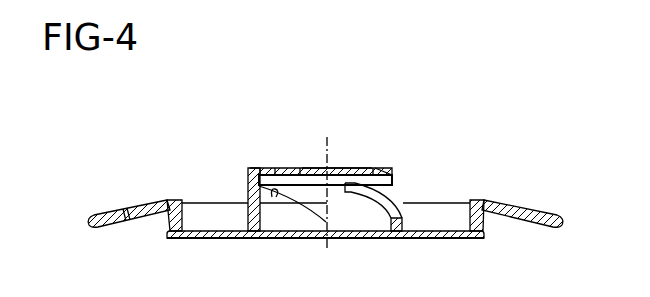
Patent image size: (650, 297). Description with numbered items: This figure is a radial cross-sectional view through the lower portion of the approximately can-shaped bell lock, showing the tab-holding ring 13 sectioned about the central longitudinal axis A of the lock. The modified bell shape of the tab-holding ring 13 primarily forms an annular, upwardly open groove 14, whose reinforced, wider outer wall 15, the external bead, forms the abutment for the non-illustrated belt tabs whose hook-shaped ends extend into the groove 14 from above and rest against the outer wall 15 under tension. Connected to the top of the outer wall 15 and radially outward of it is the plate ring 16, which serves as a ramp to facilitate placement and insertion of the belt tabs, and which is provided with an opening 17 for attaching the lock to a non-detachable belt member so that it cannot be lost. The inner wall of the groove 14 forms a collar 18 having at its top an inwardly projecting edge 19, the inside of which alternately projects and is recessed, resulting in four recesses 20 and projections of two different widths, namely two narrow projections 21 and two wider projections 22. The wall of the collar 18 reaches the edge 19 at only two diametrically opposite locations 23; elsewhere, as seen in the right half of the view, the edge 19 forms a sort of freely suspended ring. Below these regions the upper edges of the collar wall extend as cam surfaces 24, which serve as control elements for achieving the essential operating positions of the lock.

The tab-holding ring 13 is at (373, 239).
The groove 14 is at (197, 210).
The outer wall 15 is at (173, 203).
The plate ring 16 is at (109, 214).
The opening 17 is at (142, 208).
The collar 18 is at (353, 203).
The edge 19 is at (383, 168).
The recess 20 is at (285, 168).
The narrow projection 21 is at (267, 168).
The wider projection 22 is at (313, 167).
The location 23 is at (247, 190).
The cam surface 24 is at (384, 202).
The central longitudinal axis A is at (328, 208).